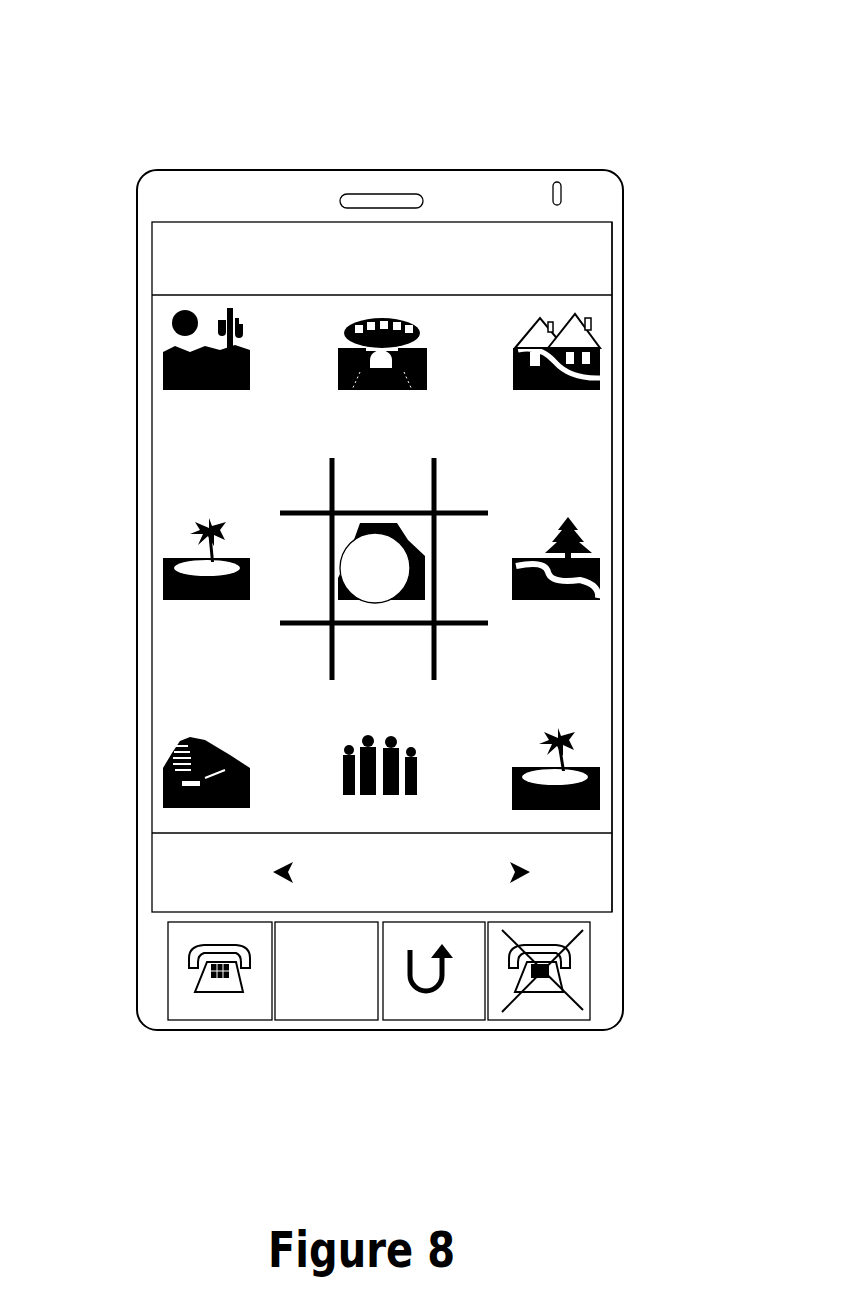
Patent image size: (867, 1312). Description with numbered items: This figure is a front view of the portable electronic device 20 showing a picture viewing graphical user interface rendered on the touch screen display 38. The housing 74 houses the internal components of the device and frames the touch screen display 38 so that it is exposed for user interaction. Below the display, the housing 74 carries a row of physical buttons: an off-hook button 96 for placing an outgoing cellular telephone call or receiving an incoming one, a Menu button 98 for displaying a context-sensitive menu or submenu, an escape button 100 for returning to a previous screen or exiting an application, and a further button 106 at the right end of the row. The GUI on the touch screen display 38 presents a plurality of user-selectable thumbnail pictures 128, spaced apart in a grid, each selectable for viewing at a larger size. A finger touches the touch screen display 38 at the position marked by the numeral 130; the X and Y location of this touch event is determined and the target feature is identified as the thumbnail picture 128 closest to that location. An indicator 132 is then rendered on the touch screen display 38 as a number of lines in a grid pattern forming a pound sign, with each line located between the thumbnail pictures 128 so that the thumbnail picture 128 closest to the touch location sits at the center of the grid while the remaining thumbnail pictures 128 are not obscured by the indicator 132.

The portable electronic device 20 is at (697, 92).
The touch screen display 38 is at (605, 822).
The housing 74 is at (617, 572).
The off-hook button 96 is at (228, 997).
The Menu button 98 is at (347, 995).
The escape button 100 is at (452, 1002).
The end call key 106 is at (547, 1002).
The thumbnail pictures 128 is at (583, 380).
The touch event position 130 is at (342, 553).
The indicator 132 is at (433, 623).